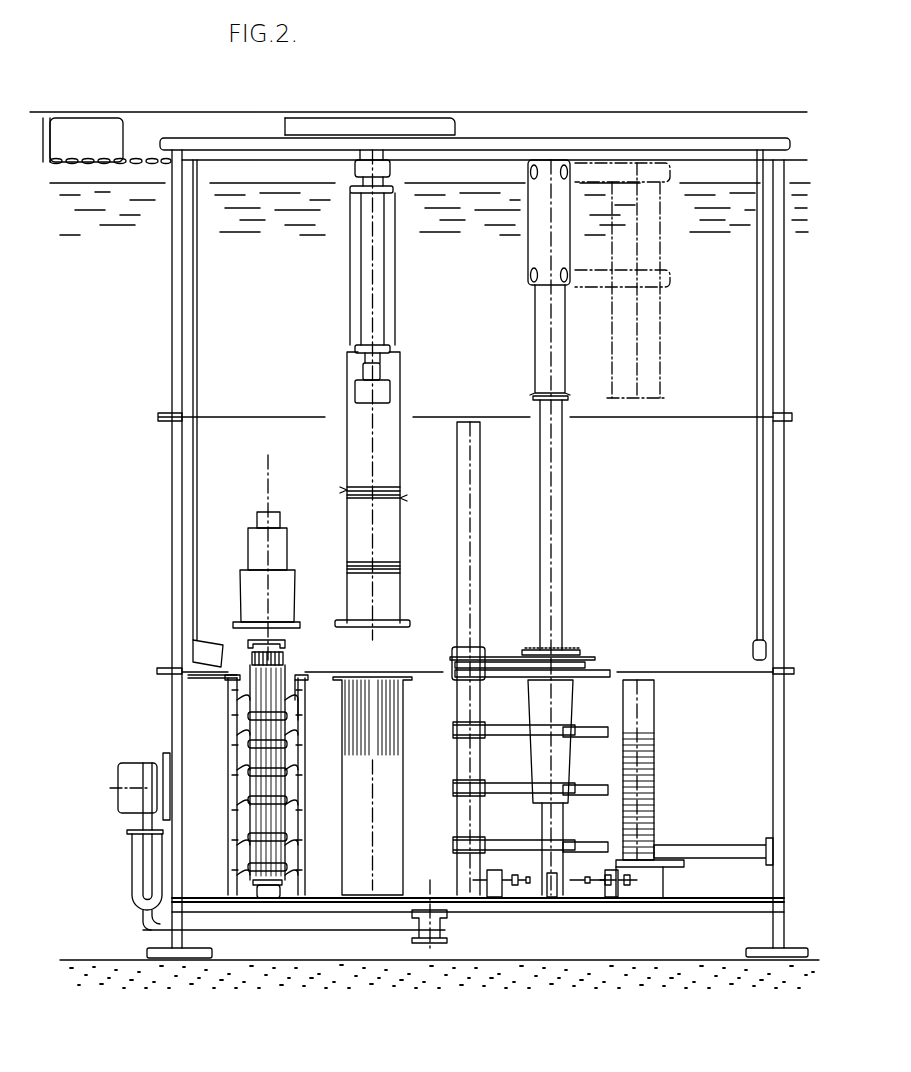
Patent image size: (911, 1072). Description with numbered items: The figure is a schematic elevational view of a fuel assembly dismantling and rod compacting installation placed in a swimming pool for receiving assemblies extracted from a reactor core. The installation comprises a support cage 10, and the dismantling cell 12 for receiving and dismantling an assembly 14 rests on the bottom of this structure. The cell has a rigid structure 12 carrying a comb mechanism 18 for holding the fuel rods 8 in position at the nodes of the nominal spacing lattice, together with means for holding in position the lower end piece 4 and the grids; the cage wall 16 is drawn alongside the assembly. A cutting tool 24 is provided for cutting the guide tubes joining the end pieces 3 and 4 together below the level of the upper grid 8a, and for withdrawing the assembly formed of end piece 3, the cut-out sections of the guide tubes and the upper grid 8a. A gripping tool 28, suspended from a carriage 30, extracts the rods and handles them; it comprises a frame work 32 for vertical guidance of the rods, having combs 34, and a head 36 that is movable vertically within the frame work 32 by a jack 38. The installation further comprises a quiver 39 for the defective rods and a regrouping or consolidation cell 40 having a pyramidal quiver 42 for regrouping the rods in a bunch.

The end piece 3 is at (250, 644).
The lower end piece 4 is at (282, 900).
The fuel rods 8 is at (260, 803).
The upper grid 8a is at (277, 661).
The support cage 10 is at (170, 476).
The dismantling cell 12 is at (215, 756).
The assembly 14 is at (308, 674).
The cage wall 16 is at (300, 705).
The comb mechanism 18 is at (200, 679).
The cutting tool 24 is at (260, 548).
The gripping tool 28 is at (382, 486).
The carriage 30 is at (430, 121).
The frame work 32 is at (350, 469).
The combs 34 is at (392, 496).
The head 36 is at (365, 390).
The jack 38 is at (367, 287).
The quiver 39 is at (386, 818).
The consolidation cell 40 is at (577, 647).
The pyramidal quiver 42 is at (548, 706).